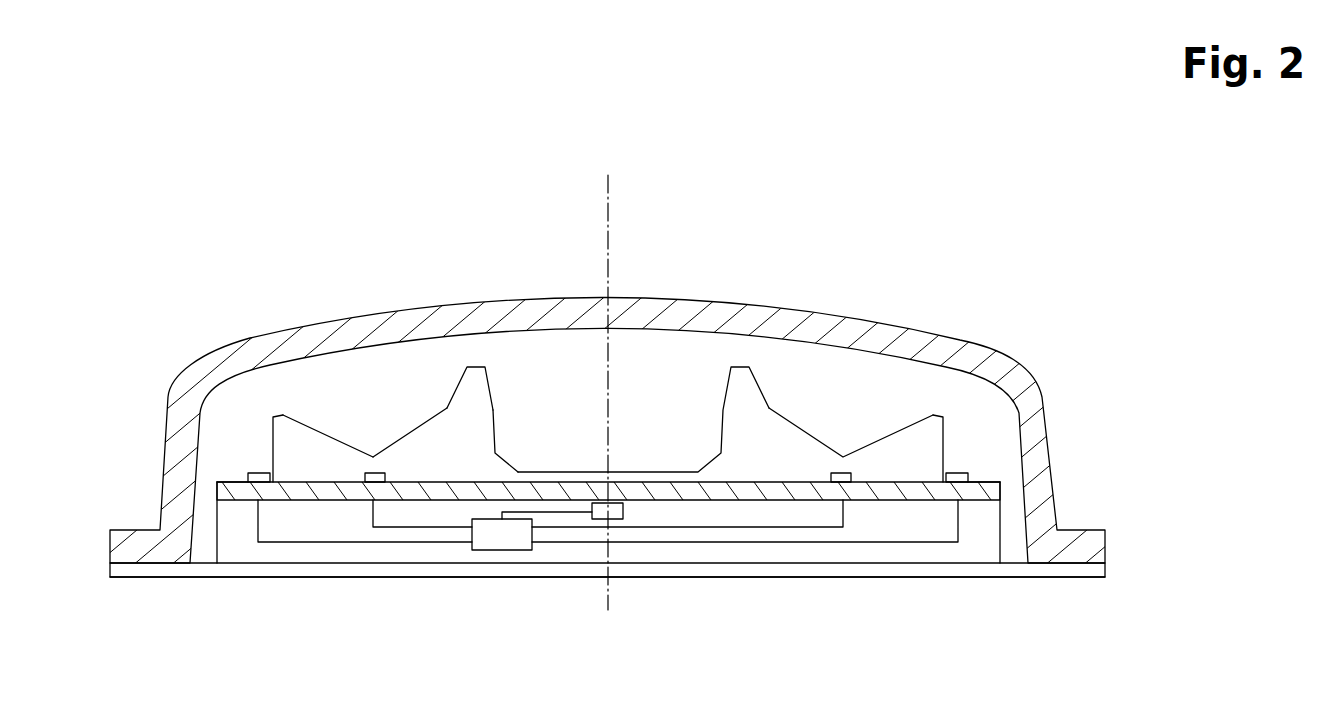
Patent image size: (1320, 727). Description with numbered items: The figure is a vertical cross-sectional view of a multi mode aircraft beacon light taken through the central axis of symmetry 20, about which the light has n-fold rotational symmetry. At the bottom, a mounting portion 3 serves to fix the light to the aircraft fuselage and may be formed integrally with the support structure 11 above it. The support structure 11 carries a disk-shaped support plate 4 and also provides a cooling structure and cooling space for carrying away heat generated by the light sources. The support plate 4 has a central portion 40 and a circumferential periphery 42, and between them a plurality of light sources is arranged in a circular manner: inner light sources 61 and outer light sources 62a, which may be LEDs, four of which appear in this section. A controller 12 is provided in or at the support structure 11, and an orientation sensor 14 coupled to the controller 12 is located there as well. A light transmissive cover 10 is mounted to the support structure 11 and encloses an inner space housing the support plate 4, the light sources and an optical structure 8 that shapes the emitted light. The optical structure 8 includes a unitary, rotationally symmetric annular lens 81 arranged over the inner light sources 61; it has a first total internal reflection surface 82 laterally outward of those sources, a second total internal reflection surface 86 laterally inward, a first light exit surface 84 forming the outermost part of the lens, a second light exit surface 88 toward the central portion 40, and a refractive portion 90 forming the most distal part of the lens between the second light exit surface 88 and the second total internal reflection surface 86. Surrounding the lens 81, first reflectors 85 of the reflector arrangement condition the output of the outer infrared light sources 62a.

The central axis of symmetry 20 is at (610, 183).
The light transmissive cover 10 is at (682, 313).
The support structure 11 is at (707, 550).
The mounting portion 3 is at (390, 568).
The support plate 4 is at (440, 490).
The central portion 40 is at (580, 488).
The circumferential periphery 42 is at (1008, 498).
The controller 12 is at (508, 537).
The orientation sensor 14 is at (623, 511).
The inner light sources 61 is at (372, 483).
The first reflectors 85 is at (262, 470).
The outer light sources 62a is at (253, 483).
The optical structure 8 is at (579, 356).
The first light exit surface 84 is at (273, 437).
The first total internal reflection surface 82 is at (327, 427).
The second total internal reflection surface 86 is at (393, 427).
The refractive portion 90 is at (490, 362).
The second light exit surface 88 is at (496, 410).
The lens 81 is at (793, 418).